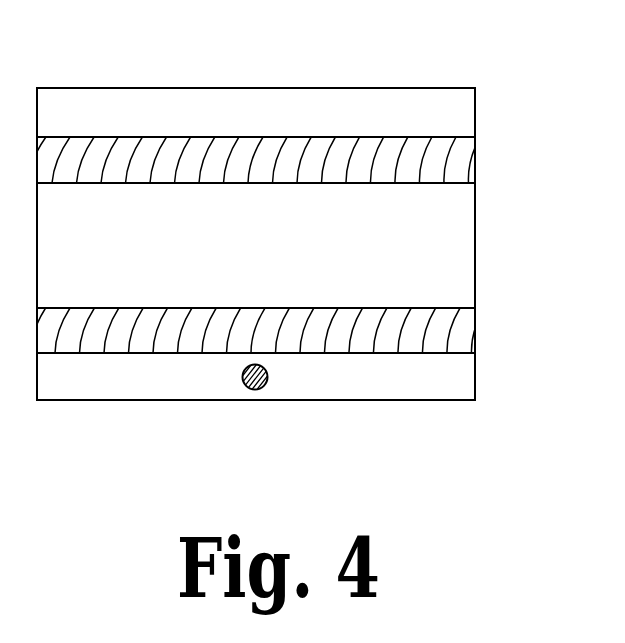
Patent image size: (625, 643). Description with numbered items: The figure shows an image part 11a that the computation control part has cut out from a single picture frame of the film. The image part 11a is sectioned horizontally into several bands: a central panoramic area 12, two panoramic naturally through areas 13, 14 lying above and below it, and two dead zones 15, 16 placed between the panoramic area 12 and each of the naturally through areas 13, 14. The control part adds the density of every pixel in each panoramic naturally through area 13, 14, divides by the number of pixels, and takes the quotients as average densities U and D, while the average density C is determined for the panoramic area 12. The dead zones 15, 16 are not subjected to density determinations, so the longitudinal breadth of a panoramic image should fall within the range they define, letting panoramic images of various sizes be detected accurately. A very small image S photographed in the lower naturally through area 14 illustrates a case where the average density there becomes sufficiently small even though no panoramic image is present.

The image part 11a is at (285, 88).
The panoramic area 12 is at (466, 246).
The panoramic naturally through area 13 is at (466, 107).
The panoramic naturally through area 14 is at (470, 385).
The dead zone 15 is at (470, 165).
The dead zone 16 is at (471, 331).
The image S is at (255, 400).